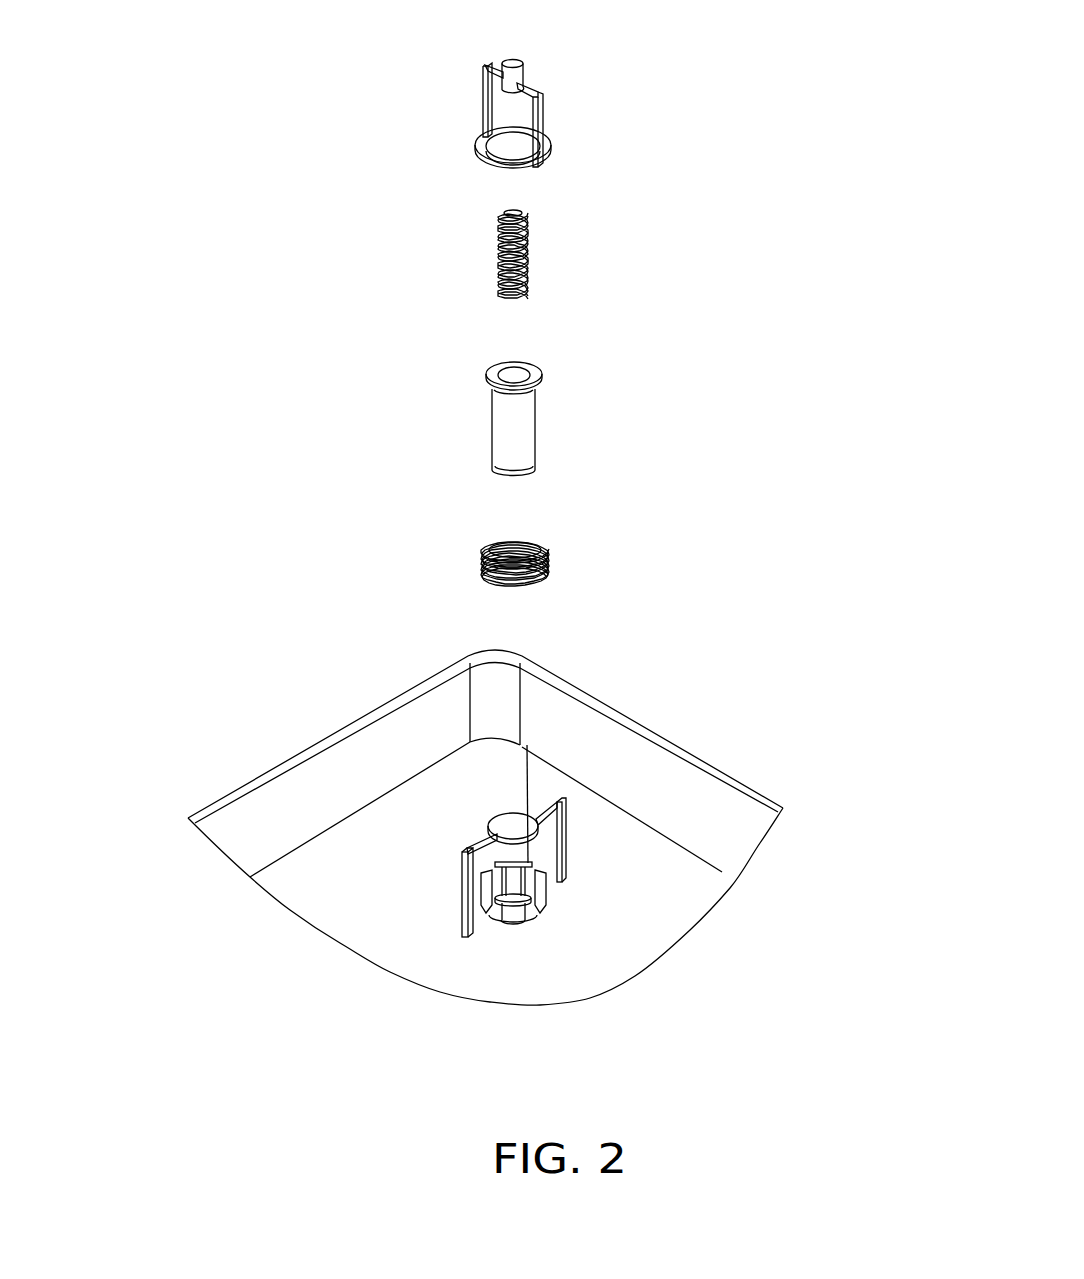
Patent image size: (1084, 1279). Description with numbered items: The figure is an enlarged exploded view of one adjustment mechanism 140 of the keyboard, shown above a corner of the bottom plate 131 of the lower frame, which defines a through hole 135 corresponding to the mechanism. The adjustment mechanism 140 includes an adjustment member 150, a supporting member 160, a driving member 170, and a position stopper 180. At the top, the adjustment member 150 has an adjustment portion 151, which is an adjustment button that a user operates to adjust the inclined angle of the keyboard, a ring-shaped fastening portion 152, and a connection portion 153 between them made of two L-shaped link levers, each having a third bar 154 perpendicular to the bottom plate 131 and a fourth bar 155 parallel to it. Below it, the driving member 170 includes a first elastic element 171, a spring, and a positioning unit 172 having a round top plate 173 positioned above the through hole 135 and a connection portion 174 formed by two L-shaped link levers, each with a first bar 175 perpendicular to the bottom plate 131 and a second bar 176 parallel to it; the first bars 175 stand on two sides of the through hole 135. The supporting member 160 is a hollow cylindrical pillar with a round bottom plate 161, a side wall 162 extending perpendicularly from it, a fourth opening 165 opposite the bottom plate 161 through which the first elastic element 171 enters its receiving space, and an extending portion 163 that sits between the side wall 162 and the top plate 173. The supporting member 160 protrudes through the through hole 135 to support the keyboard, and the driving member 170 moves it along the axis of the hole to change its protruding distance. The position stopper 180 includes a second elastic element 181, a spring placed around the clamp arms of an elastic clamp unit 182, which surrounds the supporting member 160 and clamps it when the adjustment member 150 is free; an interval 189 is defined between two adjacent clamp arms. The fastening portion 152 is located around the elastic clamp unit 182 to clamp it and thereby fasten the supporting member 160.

The bottom plate 131 is at (486, 832).
The through hole 135 is at (530, 912).
The adjustment mechanism 140 is at (521, 27).
The adjustment member 150 is at (501, 103).
The adjustment portion 151 is at (503, 62).
The fastening portion 152 is at (486, 145).
The connection portion 153 is at (431, 100).
The third bar 154 is at (486, 103).
The fourth bar 155 is at (490, 75).
The supporting member 160 is at (536, 400).
The round bottom plate 161 is at (500, 472).
The side wall 162 is at (507, 422).
The extending portion 163 is at (497, 373).
The fourth opening 165 is at (517, 375).
The driving member 170 is at (451, 573).
The first elastic element 171 is at (448, 254).
The positioning unit 172 is at (427, 761).
The top plate 173 is at (480, 838).
The connection portion 174 is at (461, 773).
The first bar 175 is at (463, 902).
The second bar 176 is at (482, 842).
The position stopper 180 is at (599, 581).
The second elastic element 181 is at (542, 556).
The elastic clamp unit 182 is at (543, 873).
The interval 189 is at (513, 823).